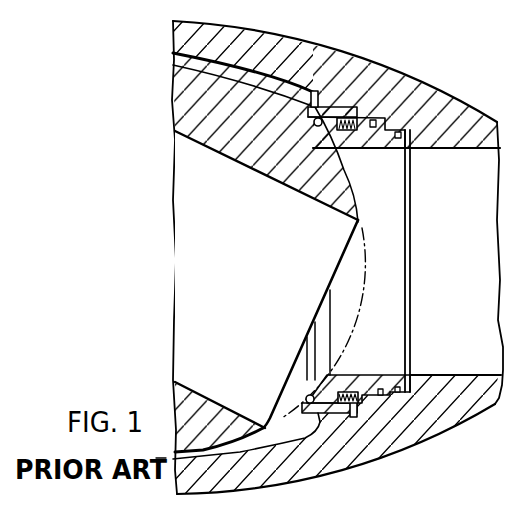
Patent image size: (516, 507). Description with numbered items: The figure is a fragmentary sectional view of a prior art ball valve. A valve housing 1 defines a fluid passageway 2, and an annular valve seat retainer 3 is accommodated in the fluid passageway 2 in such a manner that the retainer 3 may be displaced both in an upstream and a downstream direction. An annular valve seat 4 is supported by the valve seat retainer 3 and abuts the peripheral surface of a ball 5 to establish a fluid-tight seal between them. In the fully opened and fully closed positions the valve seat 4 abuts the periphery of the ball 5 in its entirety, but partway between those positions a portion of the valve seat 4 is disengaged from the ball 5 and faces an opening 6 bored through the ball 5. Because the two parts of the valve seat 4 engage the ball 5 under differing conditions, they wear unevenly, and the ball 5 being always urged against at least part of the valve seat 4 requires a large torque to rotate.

The valve housing 1 is at (453, 114).
The fluid passageway 2 is at (458, 273).
The annular valve seat retainer 3 is at (364, 368).
The annular valve seat 4 is at (311, 100).
The ball 5 is at (252, 133).
The opening 6 is at (255, 289).